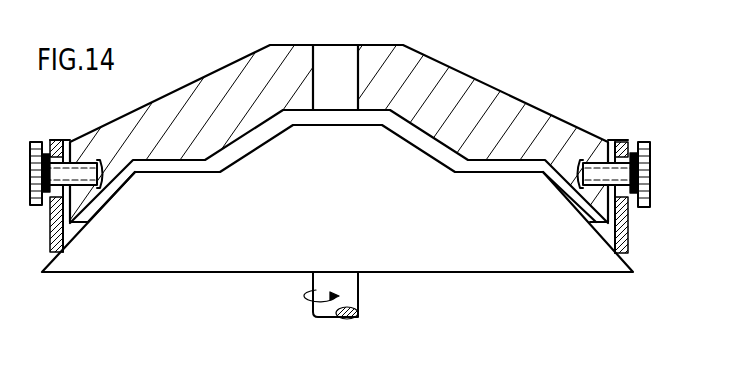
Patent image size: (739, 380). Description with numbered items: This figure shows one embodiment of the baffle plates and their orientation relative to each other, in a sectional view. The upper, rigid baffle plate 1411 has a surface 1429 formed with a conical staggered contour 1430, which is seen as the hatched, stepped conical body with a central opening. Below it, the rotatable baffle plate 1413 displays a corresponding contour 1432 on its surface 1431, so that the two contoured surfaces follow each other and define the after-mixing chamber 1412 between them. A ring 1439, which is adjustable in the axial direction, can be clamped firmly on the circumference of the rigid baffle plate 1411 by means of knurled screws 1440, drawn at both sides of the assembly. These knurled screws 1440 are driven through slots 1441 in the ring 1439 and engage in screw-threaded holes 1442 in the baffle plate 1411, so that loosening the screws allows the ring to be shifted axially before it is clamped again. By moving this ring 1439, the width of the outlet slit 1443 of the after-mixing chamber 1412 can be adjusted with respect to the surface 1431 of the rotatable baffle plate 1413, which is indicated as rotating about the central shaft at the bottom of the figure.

The rigid baffle plate 1411 is at (459, 96).
The after-mixing chamber 1412 is at (386, 118).
The rotatable baffle plate 1413 is at (497, 262).
The surface of the rigid baffle plate 1429 is at (497, 167).
The conical staggered contour 1430 is at (420, 124).
The surface of the rotatable baffle plate 1431 is at (261, 133).
The corresponding contour 1432 is at (283, 137).
The ring 1439 is at (50, 232).
The knurled screws 1440 is at (647, 142).
The slots 1441 is at (633, 141).
The screw-threaded holes 1442 is at (97, 193).
The outlet slit 1443 is at (63, 245).